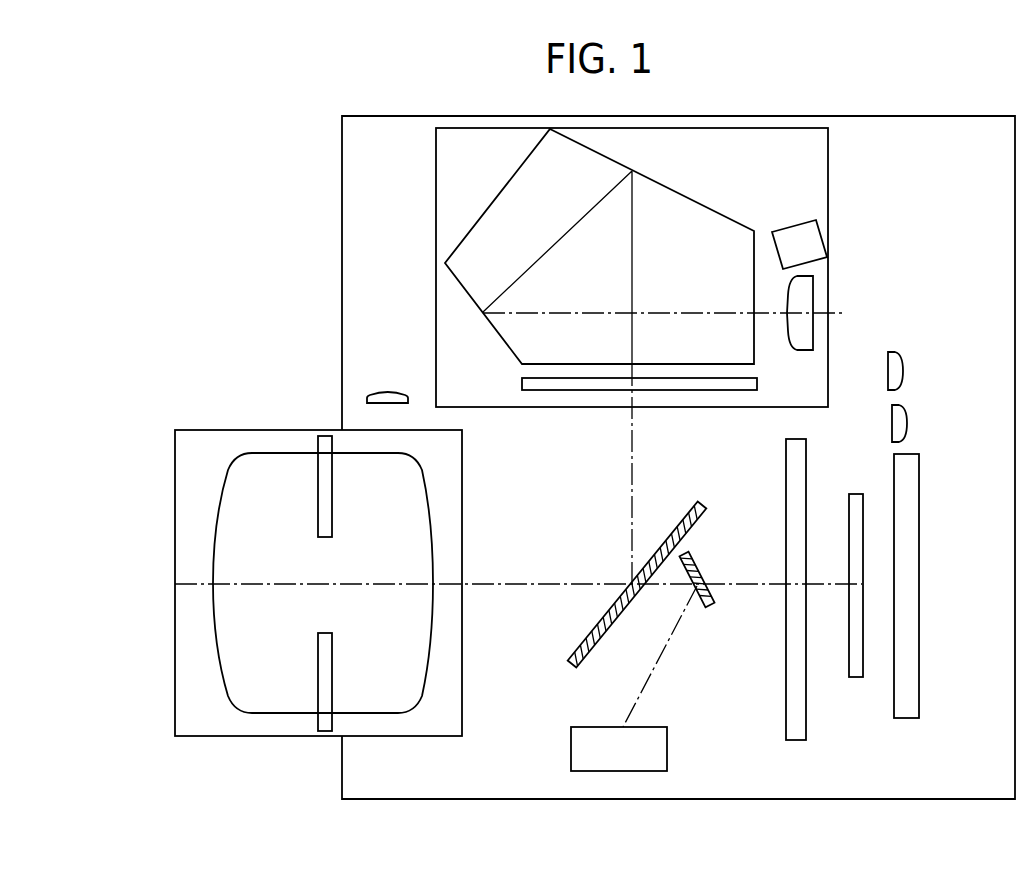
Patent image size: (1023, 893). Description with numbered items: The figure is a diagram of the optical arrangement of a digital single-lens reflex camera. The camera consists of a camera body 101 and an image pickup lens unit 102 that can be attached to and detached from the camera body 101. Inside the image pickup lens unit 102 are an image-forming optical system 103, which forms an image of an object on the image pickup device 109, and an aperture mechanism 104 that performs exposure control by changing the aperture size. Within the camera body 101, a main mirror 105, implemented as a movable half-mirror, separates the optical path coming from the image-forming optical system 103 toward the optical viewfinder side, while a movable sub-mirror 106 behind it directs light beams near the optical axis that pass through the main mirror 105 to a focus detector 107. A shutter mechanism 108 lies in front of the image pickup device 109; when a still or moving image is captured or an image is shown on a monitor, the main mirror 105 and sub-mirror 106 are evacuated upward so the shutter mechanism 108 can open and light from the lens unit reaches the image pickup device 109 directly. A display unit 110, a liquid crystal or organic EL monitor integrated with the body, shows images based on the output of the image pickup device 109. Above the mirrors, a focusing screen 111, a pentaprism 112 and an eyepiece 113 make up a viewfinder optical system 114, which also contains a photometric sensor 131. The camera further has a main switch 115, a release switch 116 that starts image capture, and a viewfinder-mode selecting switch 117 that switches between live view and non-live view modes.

The camera body 101 is at (402, 799).
The image pickup lens unit 102 is at (192, 737).
The image-forming optical system 103 is at (295, 453).
The aperture mechanism 104 is at (317, 720).
The main mirror 105 is at (565, 660).
The sub-mirror 106 is at (693, 560).
The focus detector 107 is at (620, 771).
The shutter mechanism 108 is at (795, 740).
The image pickup device 109 is at (853, 677).
The display unit 110 is at (919, 660).
The focusing screen 111 is at (720, 392).
The pentaprism 112 is at (680, 190).
The eyepiece 113 is at (815, 297).
The viewfinder optical system 114 is at (828, 188).
The main switch 115 is at (903, 372).
The release switch 116 is at (395, 388).
The viewfinder-mode selecting switch 117 is at (907, 422).
The photometric sensor 131 is at (822, 230).